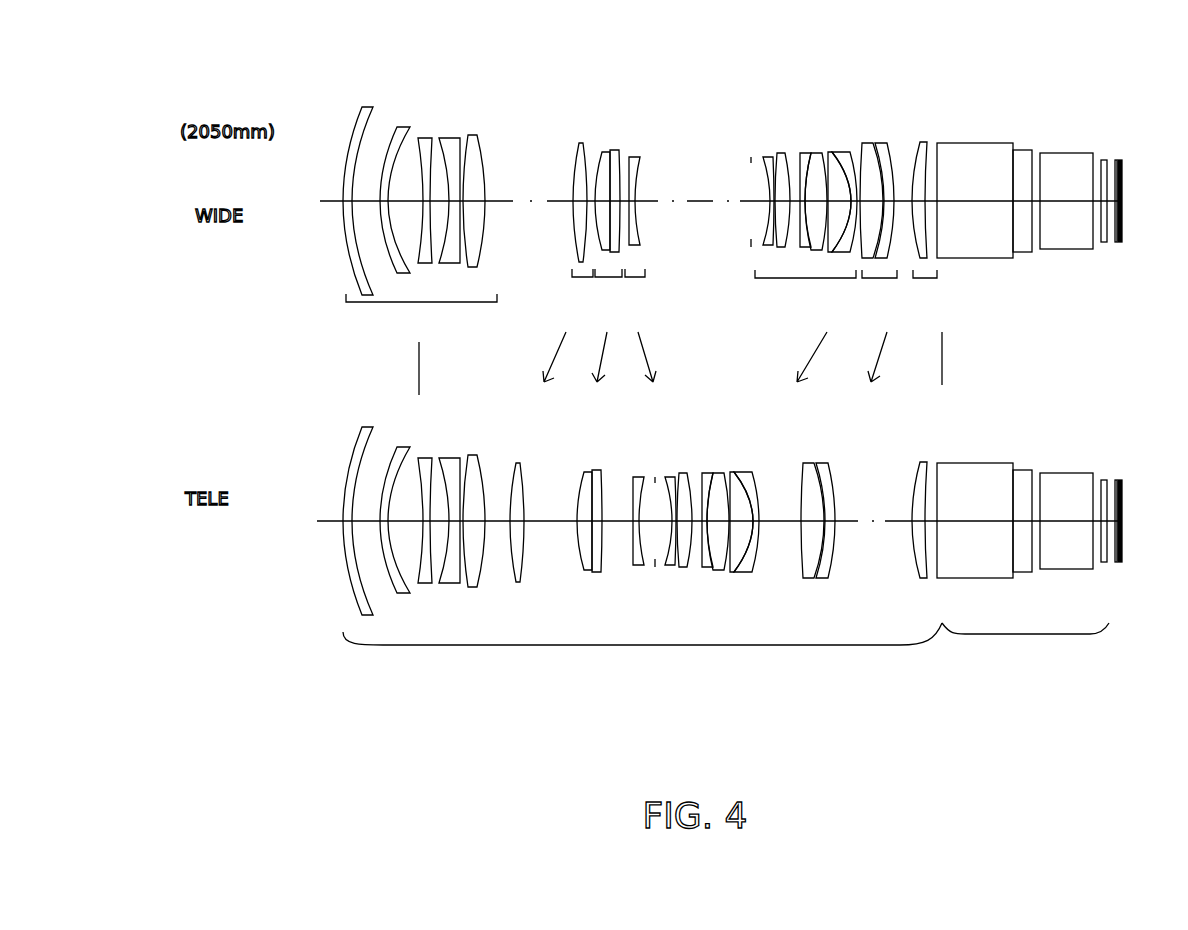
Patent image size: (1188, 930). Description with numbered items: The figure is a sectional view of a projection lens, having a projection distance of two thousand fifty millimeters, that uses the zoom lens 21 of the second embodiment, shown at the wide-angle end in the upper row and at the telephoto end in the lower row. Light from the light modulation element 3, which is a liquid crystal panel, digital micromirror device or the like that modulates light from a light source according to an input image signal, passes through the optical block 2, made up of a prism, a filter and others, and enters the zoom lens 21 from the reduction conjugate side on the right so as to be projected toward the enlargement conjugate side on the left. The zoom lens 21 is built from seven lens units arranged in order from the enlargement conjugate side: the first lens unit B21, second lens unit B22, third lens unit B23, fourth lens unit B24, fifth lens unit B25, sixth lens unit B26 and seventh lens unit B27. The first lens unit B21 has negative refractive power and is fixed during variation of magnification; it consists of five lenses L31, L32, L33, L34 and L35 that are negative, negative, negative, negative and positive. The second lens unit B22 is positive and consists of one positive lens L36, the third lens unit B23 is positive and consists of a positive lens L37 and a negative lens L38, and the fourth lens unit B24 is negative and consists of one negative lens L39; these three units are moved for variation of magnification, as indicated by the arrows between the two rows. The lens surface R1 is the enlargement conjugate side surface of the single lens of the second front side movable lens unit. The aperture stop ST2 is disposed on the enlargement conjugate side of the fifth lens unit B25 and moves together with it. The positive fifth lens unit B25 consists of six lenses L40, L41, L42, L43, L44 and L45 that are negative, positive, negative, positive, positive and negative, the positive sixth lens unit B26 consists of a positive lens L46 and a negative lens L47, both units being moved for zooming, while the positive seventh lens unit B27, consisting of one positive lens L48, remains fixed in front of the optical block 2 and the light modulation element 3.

The negative lens L31 is at (370, 107).
The negative lens L32 is at (407, 127).
The negative lens L33 is at (428, 138).
The negative lens L34 is at (457, 138).
The positive lens L35 is at (475, 135).
The positive lens L36 is at (582, 143).
The positive lens L37 is at (606, 152).
The negative lens L38 is at (616, 150).
The negative lens L39 is at (635, 158).
The negative lens L40 is at (763, 157).
The positive lens L41 is at (779, 153).
The negative lens L42 is at (805, 153).
The positive lens L43 is at (815, 153).
The positive lens L44 is at (832, 152).
The negative lens L45 is at (847, 152).
The positive lens L46 is at (867, 143).
The negative lens L47 is at (883, 143).
The positive lens L48 is at (925, 142).
The first lens unit B21 is at (421, 313).
The second lens unit B22 is at (571, 293).
The third lens unit B23 is at (607, 293).
The fourth lens unit B24 is at (645, 293).
The fifth lens unit B25 is at (805, 293).
The sixth lens unit B26 is at (880, 293).
The seventh lens unit B27 is at (935, 293).
The aperture stop ST2 is at (655, 469).
The lens surface R1 is at (633, 560).
The zoom lens 21 is at (642, 567).
The optical block 2 is at (1027, 637).
The light modulation element 3 is at (1122, 493).